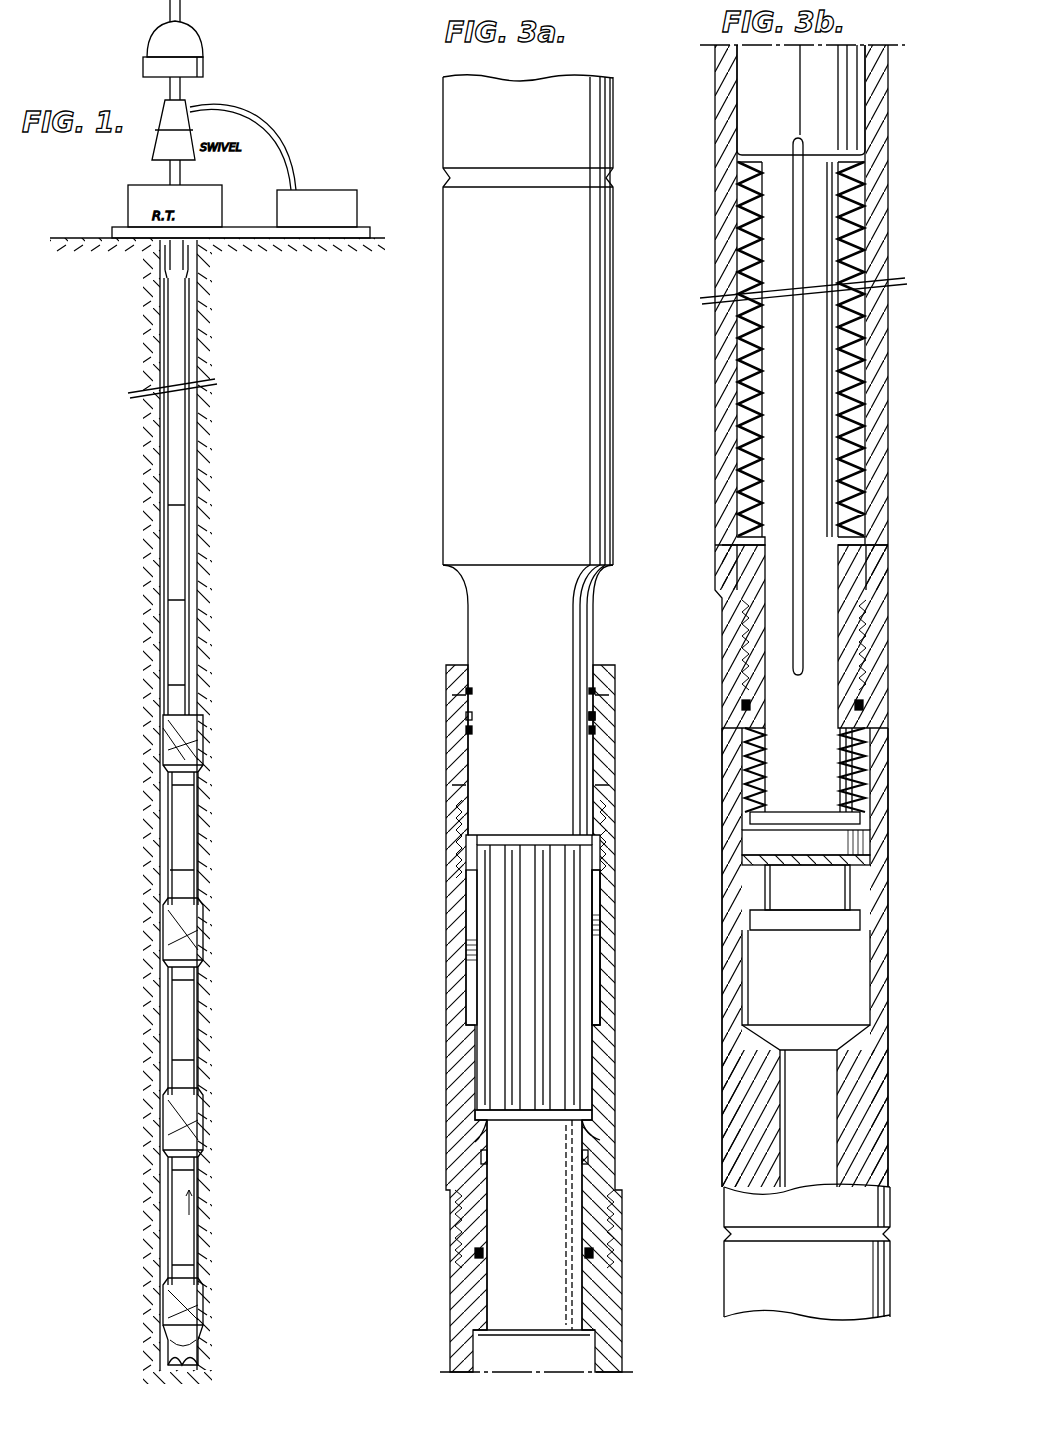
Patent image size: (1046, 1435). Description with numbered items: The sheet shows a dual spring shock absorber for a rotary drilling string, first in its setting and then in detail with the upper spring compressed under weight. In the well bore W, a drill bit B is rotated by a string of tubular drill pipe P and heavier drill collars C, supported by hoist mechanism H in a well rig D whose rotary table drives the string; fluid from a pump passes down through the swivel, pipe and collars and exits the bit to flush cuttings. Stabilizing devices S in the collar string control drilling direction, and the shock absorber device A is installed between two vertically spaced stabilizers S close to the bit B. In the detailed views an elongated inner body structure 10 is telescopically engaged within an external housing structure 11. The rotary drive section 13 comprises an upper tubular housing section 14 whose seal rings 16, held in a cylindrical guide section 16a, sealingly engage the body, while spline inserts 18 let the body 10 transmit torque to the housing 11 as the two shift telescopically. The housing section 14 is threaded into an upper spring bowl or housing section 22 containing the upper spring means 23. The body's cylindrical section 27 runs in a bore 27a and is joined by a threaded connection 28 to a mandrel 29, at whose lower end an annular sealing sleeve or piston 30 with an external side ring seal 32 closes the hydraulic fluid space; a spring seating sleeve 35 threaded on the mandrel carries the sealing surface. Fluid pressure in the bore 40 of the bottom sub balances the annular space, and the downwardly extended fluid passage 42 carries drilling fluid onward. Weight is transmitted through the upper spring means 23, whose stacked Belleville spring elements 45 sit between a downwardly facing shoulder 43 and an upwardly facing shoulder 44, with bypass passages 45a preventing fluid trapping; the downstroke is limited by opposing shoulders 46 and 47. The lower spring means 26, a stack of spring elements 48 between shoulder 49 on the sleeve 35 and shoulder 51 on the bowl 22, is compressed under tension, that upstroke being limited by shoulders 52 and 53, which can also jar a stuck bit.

In FIG. 1, the hoist mechanism H is at (200, 40).
In FIG. 1, the well rig D is at (368, 184).
In FIG. 1, the drill pipe P is at (188, 255).
In FIG. 1, the well bore W is at (196, 532).
In FIG. 1, the drill collars C is at (170, 443).
In FIG. 3A, the drill collars C is at (612, 115).
In FIG. 3B, the drill collars C is at (801, 100).
In FIG. 1, the stabilizing devices S is at (163, 742).
In FIG. 1, the shock absorber device A is at (190, 1208).
In FIG. 1, the drill bit B is at (152, 1356).
In FIG. 3B, the drill bit B is at (880, 1294).
In FIG. 3A, the inner body structure 10 is at (452, 611).
In FIG. 3A, the external housing structure 11 is at (433, 889).
In FIG. 3A, the rotary drive section 13 is at (454, 966).
In FIG. 3A, the upper tubular housing section 14 is at (605, 988).
In FIG. 3A, the side ring sealing means 16 is at (466, 730).
In FIG. 3A, the cylindrical guide section 16a is at (598, 718).
In FIG. 3A, the spline inserts 18 is at (596, 925).
In FIG. 3B, the upper spring bowl or housing section 22 is at (880, 235).
In FIG. 3B, the upper spring means 23 is at (878, 374).
In FIG. 3B, the lower spring means 26 is at (734, 774).
In FIG. 3A, the cylindrical section 27 is at (540, 1270).
In FIG. 3A, the bore 27a is at (580, 1200).
In FIG. 3A, the threaded connection 28 is at (464, 1213).
In FIG. 3B, the mandrel 29 is at (813, 738).
In FIG. 3B, the annular sealing sleeve or piston 30 is at (748, 840).
In FIG. 3B, the external side ring seal 32 is at (745, 858).
In FIG. 3B, the spring seating or retaining sleeve 35 is at (767, 888).
In FIG. 3B, the bore 40 is at (817, 996).
In FIG. 3B, the downwardly extended fluid passage 42 is at (825, 1128).
In FIG. 3B, the downwardly facing shoulder 43 is at (745, 168).
In FIG. 3B, the upwardly facing shoulder 44 is at (738, 528).
In FIG. 3B, the spring elements 45 is at (745, 362).
In FIG. 3B, the bypass passages 45a is at (798, 233).
In FIG. 3A, the upwardly facing shoulder 46 is at (600, 1140).
In FIG. 3A, the downwardly facing shoulder 47 is at (475, 1142).
In FIG. 3B, the spring elements 48 is at (858, 742).
In FIG. 3B, the upwardly facing shoulder 49 is at (858, 818).
In FIG. 3B, the downwardly facing shoulder 51 is at (862, 707).
In FIG. 3A, the downwardly facing shoulder 52 is at (478, 1268).
In FIG. 3A, the upwardly facing shoulder 53 is at (590, 1328).